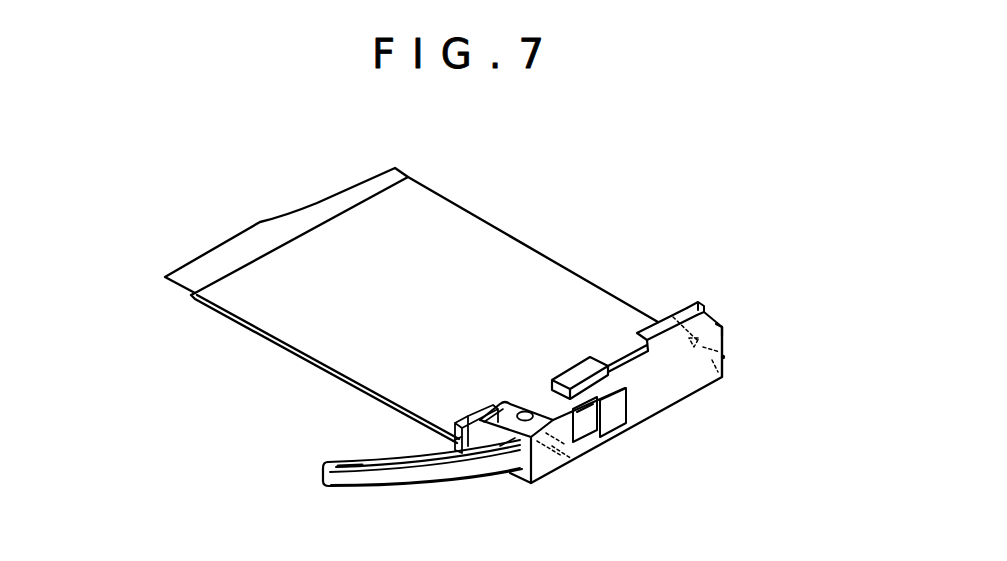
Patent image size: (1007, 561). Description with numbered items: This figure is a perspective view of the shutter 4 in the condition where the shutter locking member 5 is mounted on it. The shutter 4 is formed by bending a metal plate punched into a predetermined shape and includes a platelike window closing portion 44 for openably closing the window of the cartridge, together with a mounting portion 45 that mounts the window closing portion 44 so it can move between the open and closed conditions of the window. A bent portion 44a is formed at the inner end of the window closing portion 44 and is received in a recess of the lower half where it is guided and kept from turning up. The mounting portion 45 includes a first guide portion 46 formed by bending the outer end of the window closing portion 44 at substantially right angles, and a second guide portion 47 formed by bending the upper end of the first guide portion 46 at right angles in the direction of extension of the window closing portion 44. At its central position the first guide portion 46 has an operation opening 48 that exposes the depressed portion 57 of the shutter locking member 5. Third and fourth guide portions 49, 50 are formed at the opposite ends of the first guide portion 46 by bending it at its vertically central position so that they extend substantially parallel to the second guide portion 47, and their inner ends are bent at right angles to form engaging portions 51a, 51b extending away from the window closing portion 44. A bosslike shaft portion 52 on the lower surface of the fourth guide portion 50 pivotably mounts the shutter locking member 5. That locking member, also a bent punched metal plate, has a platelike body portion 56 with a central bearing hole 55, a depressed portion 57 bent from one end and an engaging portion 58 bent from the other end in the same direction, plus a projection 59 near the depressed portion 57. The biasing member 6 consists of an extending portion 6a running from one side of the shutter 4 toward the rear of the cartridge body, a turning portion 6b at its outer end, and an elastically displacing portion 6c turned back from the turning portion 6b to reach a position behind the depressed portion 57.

The shutter 4 is at (520, 221).
The window closing portion 44 is at (459, 214).
The bent portion 44a is at (373, 188).
The mounting portion 45 is at (727, 313).
The first guide portion 46 is at (689, 389).
The second guide portion 47 is at (651, 327).
The operation opening 48 is at (628, 416).
The third guide portion 49 is at (725, 328).
The shutter locking member 5 is at (455, 424).
The fourth guide portion 50 is at (528, 403).
The engaging portion 51a is at (698, 304).
The engaging portion 51b is at (470, 414).
The shaft portion 52 is at (522, 408).
The bearing hole 55 is at (500, 403).
The body portion 56 is at (505, 441).
The depressed portion 57 is at (599, 444).
The engaging portion 58 is at (456, 443).
The projection 59 is at (570, 460).
The biasing member 6 is at (249, 411).
The extending portion 6a is at (350, 485).
The turning portion 6b is at (326, 473).
The elastically displacing portion 6c is at (340, 462).